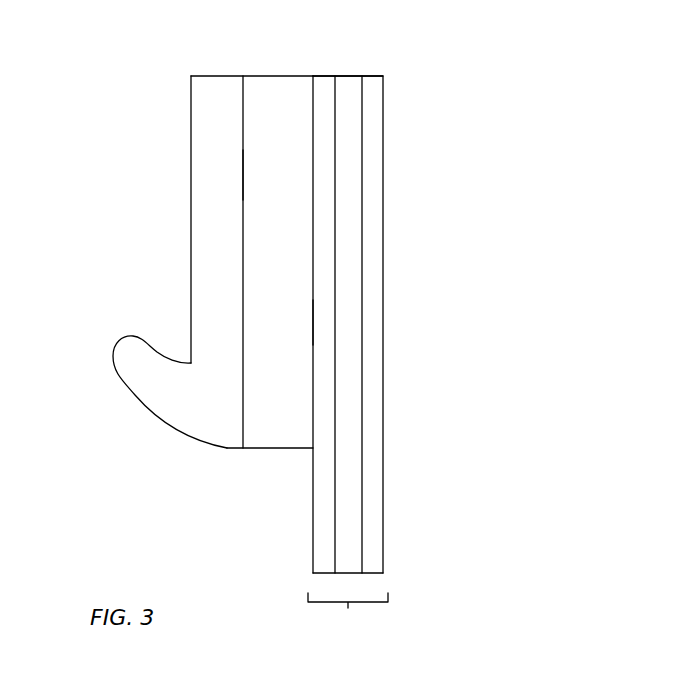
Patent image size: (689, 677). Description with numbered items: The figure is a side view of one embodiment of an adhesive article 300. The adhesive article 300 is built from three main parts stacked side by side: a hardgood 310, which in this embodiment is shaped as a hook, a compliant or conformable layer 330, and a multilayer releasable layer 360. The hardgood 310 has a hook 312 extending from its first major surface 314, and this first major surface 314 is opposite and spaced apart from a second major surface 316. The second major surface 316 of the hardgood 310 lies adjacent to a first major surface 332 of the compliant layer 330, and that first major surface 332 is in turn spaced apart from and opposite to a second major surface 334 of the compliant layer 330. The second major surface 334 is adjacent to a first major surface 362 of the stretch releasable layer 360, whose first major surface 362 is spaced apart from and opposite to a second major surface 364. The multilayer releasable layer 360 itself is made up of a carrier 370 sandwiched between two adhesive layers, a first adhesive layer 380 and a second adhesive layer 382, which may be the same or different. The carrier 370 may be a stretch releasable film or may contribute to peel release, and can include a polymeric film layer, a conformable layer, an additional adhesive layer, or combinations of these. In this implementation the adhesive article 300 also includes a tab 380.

The adhesive article 300 is at (507, 163).
The hardgood 310 is at (205, 112).
The hook 312 is at (132, 375).
The first major surface 314 is at (193, 240).
The second major surface 316 is at (243, 180).
The compliant layer 330 is at (282, 435).
The first major surface 332 is at (243, 280).
The second major surface 334 is at (313, 340).
The multilayer releasable layer 360 is at (348, 617).
The first major surface 362 is at (313, 178).
The second major surface 364 is at (372, 107).
The carrier 370 is at (347, 88).
The first adhesive layer 380 is at (370, 472).
The second adhesive layer 382 is at (323, 85).